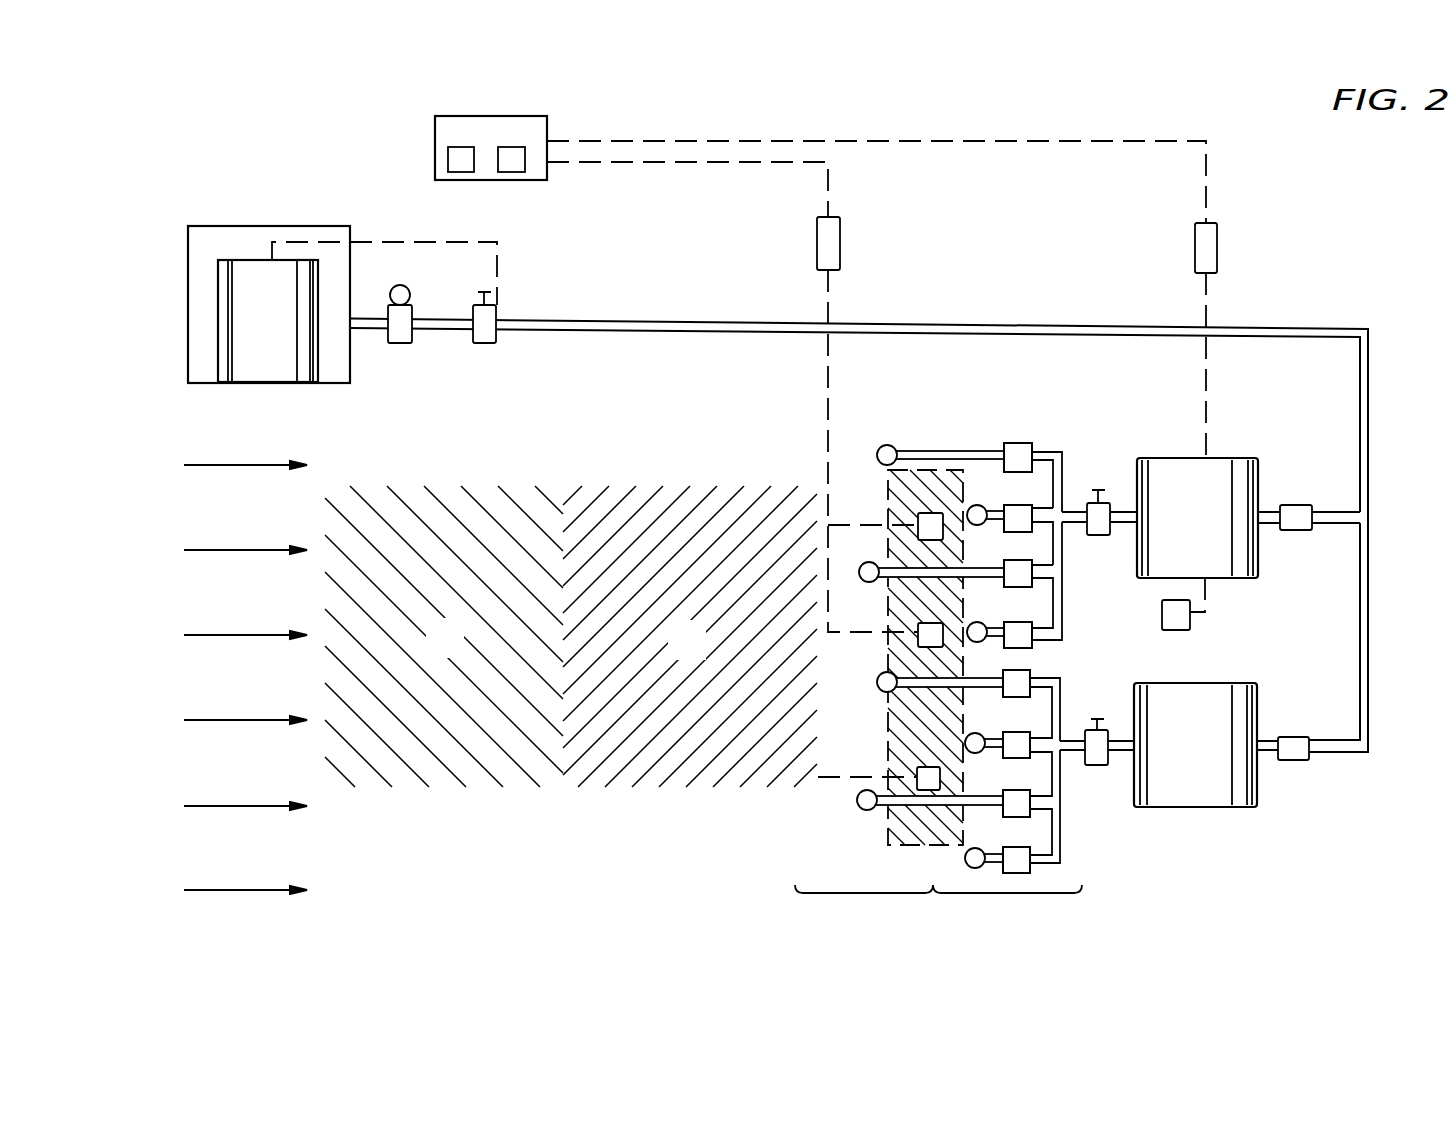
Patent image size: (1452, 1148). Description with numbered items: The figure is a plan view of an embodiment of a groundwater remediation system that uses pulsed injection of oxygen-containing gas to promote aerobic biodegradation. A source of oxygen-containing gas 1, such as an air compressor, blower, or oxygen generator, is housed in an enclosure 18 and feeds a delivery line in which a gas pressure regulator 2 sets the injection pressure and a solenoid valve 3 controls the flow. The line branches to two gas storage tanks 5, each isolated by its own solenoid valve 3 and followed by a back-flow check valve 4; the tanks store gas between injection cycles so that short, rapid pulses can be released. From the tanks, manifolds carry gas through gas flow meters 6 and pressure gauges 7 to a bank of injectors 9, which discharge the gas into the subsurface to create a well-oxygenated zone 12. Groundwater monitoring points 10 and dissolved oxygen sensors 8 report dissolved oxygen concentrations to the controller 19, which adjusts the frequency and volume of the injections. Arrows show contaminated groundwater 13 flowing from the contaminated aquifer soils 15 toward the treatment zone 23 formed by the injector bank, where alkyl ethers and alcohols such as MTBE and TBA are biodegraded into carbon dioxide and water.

The source of oxygen-containing gas 1 is at (273, 336).
The gas pressure regulator 2 is at (405, 286).
The solenoid valve 3 is at (483, 292).
The back-flow check valve 4 is at (1297, 505).
The gas storage tank 5 is at (1205, 532).
The gas flow meter 6 is at (1018, 443).
The pressure gauge 7 is at (1018, 443).
The dissolved oxygen sensor 8 is at (840, 243).
The injector 9 is at (884, 445).
The groundwater monitoring point 10 is at (928, 623).
The well-oxygenated zone 12 is at (861, 742).
The contaminated groundwater 13 is at (700, 653).
The contaminated aquifer soils 15 is at (456, 652).
The enclosure 18 is at (188, 258).
The controller 19 is at (435, 127).
The treatment zone 23 is at (938, 911).